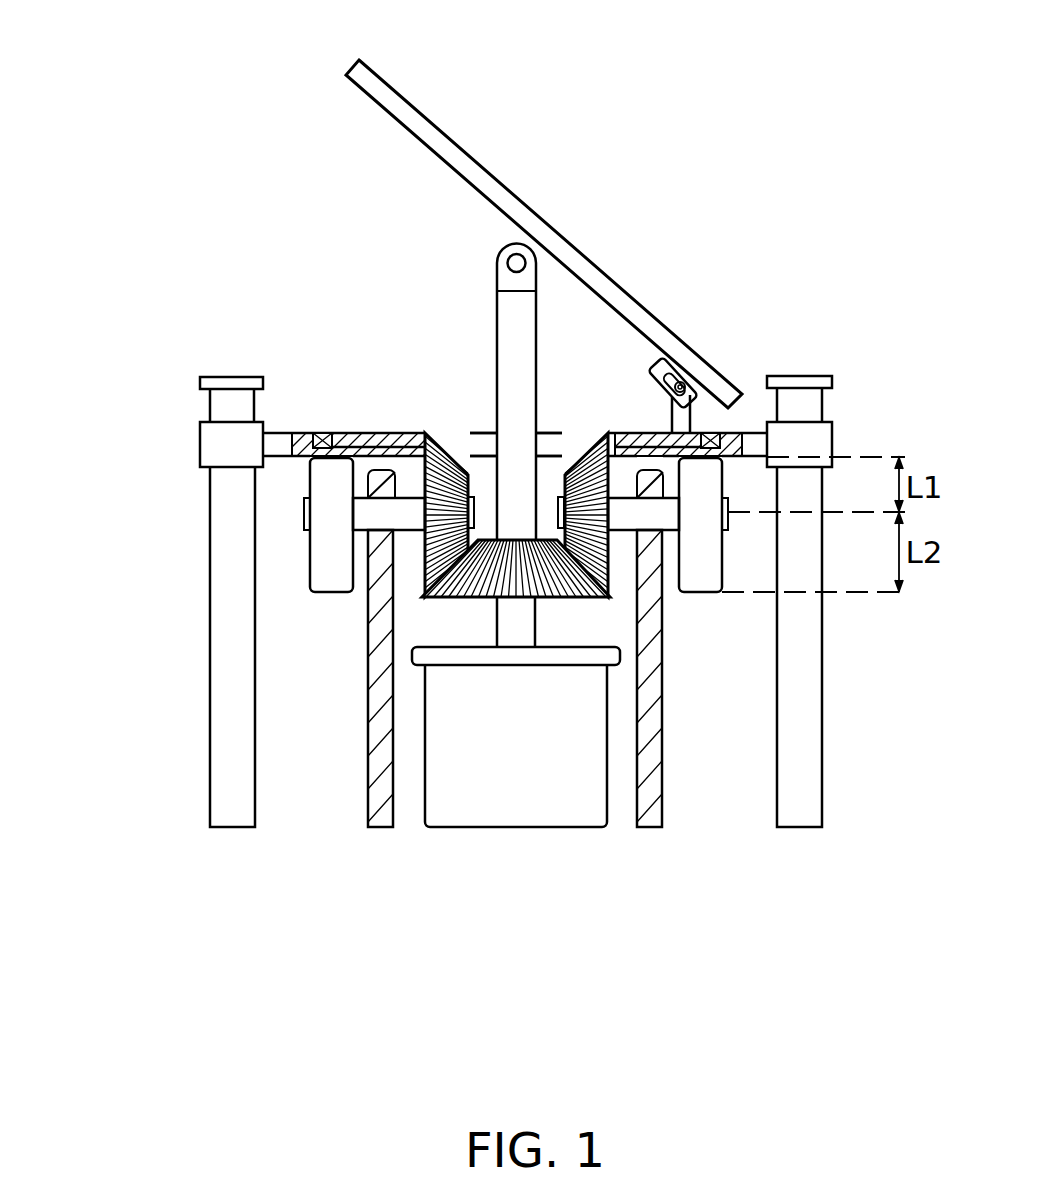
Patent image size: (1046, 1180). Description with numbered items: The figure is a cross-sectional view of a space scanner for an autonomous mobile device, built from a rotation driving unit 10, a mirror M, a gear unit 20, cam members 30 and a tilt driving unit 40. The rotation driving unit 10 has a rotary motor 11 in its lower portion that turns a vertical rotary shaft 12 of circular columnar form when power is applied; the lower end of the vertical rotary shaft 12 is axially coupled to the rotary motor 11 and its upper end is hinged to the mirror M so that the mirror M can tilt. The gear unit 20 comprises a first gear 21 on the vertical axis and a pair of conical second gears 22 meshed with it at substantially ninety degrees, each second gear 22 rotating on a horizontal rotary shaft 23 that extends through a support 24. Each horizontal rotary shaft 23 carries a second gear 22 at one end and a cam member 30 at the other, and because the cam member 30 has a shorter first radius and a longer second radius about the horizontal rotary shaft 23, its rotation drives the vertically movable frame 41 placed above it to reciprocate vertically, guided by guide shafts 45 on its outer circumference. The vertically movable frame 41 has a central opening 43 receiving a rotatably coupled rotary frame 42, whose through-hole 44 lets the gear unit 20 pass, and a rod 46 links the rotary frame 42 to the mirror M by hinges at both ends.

The mirror M is at (398, 99).
The rotation driving unit 10 is at (554, 840).
The rotary motor 11 is at (477, 817).
The vertical rotary shaft 12 is at (530, 315).
The gear unit 20 is at (122, 633).
The first gear 21 is at (513, 600).
The second gear 22 is at (420, 565).
The horizontal rotary shaft 23 is at (367, 513).
The support 24 is at (653, 813).
The cam member 30 is at (328, 565).
The tilt driving unit 40 is at (358, 418).
The vertically movable frame 41 is at (278, 438).
The rotary frame 42 is at (372, 437).
The central opening 43 is at (323, 437).
The through-hole 44 is at (468, 438).
The guide shaft 45 is at (808, 812).
The rod 46 is at (670, 408).